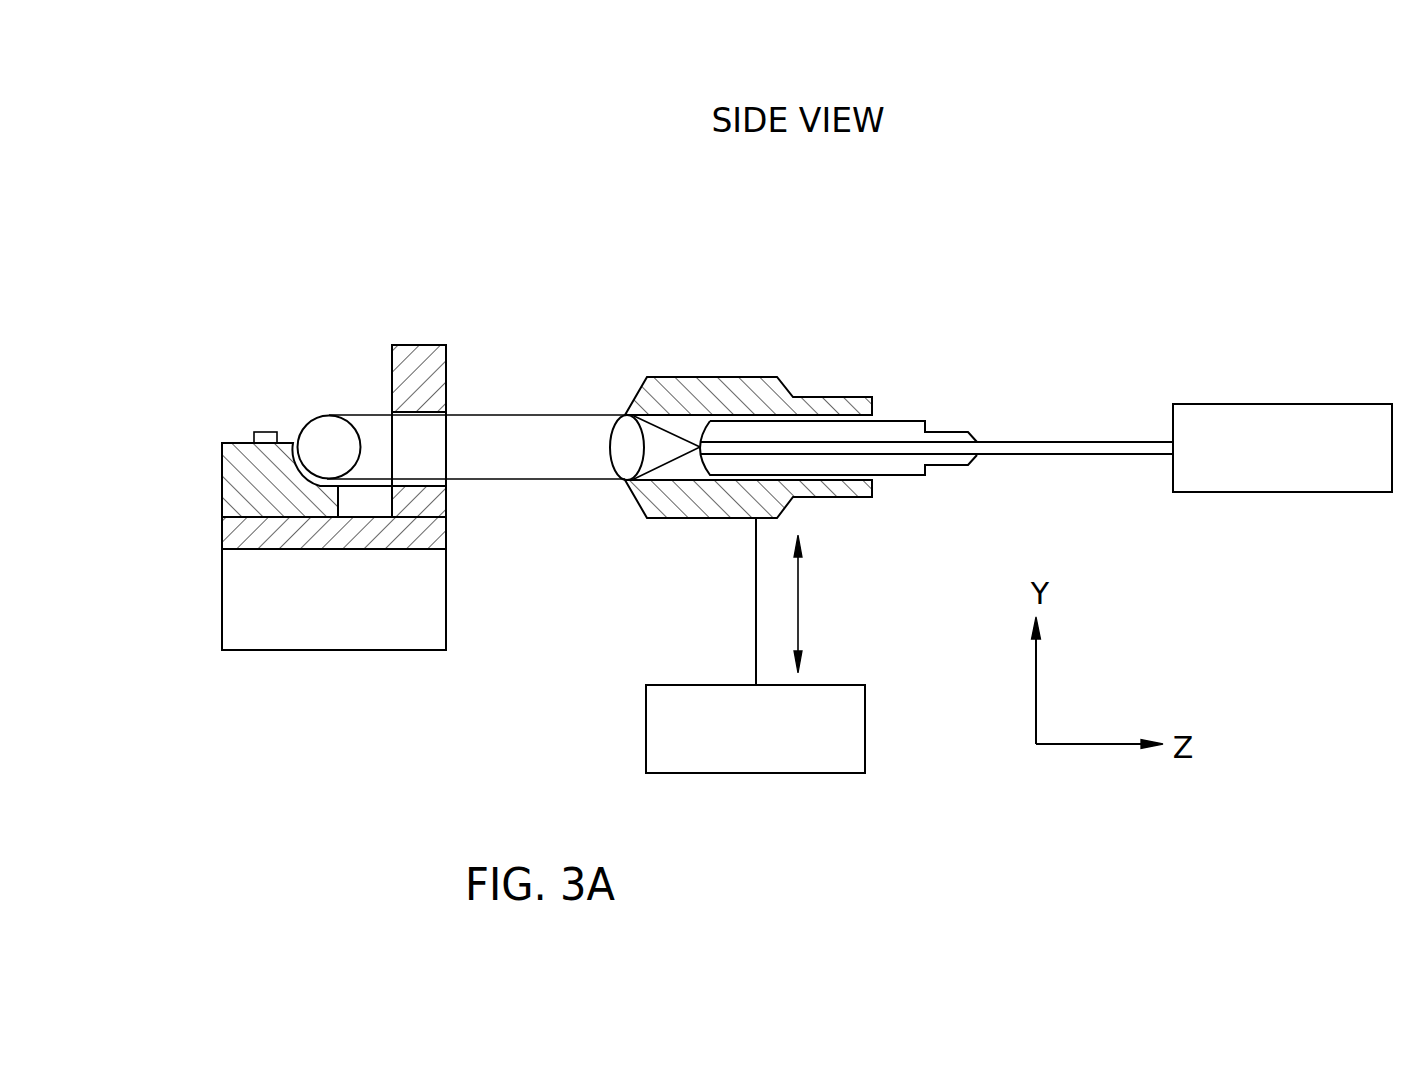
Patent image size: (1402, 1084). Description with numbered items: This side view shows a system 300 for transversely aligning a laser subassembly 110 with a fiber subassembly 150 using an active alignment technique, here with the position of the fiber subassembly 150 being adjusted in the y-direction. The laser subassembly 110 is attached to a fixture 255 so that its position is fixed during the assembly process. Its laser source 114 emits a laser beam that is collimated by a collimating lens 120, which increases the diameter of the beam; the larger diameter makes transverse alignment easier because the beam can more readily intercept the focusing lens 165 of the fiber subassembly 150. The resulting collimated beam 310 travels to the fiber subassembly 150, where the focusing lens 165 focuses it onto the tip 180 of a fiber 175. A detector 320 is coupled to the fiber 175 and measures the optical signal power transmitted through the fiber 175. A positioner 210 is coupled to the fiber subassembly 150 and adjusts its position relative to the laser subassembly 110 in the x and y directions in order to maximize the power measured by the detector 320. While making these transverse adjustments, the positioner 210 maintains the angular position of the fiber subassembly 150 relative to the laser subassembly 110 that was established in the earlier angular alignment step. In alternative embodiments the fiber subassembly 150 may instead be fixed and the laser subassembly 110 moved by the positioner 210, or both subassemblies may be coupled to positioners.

The system 300 is at (1080, 195).
The laser subassembly 110 is at (163, 525).
The laser source 114 is at (222, 470).
The collimating lens 120 is at (303, 417).
The fixture 255 is at (373, 650).
The collimated beam 310 is at (535, 415).
The fiber subassembly 150 is at (798, 378).
The focusing lens 165 is at (612, 474).
The tip 180 is at (698, 450).
The fiber 175 is at (1050, 442).
The detector 320 is at (1278, 492).
The positioner 210 is at (753, 773).